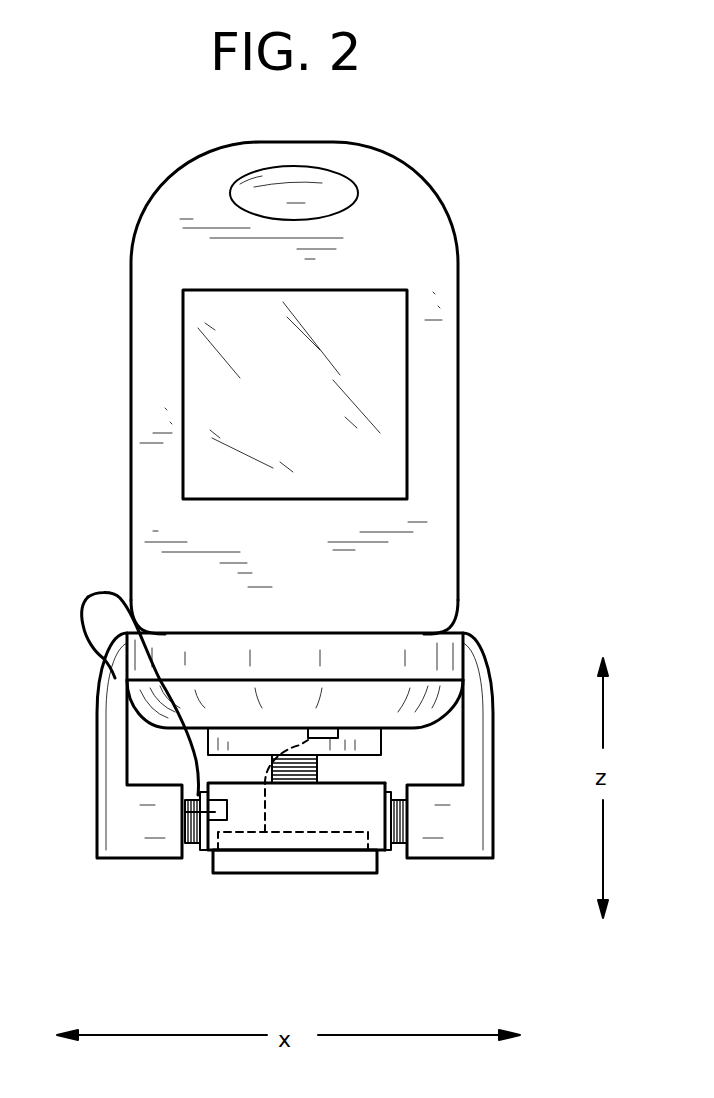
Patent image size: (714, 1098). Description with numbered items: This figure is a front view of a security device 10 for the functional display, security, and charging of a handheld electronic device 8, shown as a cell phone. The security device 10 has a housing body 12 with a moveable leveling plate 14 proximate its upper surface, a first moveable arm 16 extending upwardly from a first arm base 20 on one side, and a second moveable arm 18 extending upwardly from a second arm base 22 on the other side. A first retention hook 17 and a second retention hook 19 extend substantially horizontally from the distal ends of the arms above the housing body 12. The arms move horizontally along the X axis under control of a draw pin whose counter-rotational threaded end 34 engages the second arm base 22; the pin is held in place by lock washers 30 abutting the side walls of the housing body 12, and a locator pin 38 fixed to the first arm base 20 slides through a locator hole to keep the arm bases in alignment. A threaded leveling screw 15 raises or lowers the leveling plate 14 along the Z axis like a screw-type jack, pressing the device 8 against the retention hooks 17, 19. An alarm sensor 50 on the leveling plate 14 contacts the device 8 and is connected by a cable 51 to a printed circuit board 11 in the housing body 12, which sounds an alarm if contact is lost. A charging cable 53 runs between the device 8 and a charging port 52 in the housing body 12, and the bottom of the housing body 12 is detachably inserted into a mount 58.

The handheld electronic device 8 is at (150, 352).
The security device 10 is at (505, 375).
The printed circuit board 11 is at (258, 840).
The housing body 12 is at (340, 820).
The leveling plate 14 is at (268, 748).
The threaded leveling screw 15 is at (270, 770).
The first moveable arm 16 is at (110, 678).
The first retention hook 17 is at (150, 633).
The second moveable arm 18 is at (478, 668).
The second retention hook 19 is at (425, 634).
The first arm base 20 is at (95, 832).
The second arm base 22 is at (493, 830).
The lock washer 30 is at (197, 798).
The threaded end 34 is at (393, 847).
The locator pin 38 is at (192, 845).
The alarm sensor 50 is at (330, 732).
The cable 51 is at (293, 795).
The charging port 52 is at (185, 808).
The charging cable 53 is at (88, 598).
The mount 58 is at (288, 860).